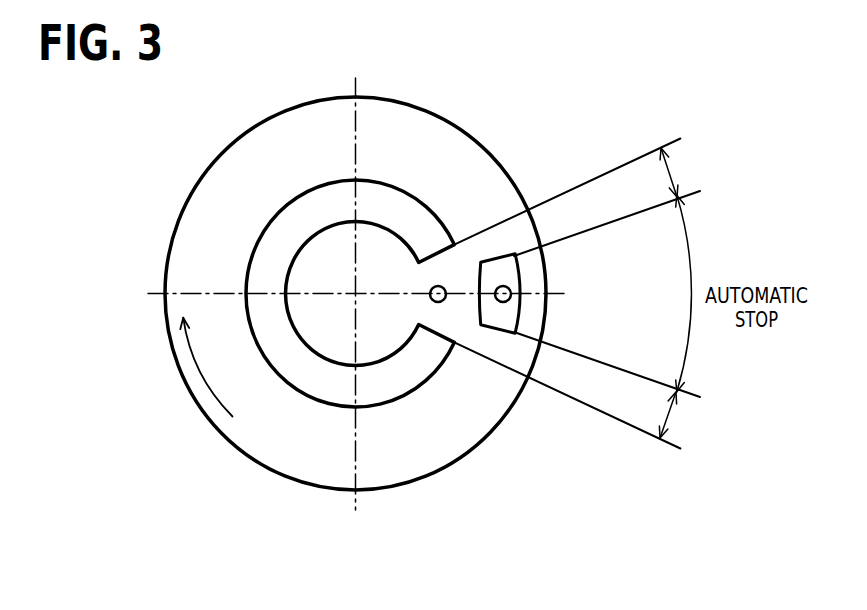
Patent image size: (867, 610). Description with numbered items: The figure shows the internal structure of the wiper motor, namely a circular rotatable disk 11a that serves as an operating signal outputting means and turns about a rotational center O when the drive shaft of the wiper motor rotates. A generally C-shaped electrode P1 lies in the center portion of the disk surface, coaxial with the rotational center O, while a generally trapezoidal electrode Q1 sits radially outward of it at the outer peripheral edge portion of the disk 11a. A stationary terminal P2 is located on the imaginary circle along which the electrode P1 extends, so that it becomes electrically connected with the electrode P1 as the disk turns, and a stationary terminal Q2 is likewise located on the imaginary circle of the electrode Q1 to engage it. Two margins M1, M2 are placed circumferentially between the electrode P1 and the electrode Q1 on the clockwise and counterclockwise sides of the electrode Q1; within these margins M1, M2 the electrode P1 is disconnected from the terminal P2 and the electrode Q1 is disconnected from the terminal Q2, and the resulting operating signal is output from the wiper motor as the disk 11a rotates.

The rotatable disk 11a is at (295, 468).
The C-shaped electrode P1 is at (400, 388).
The stationary terminal P2 is at (438, 286).
The trapezoidal electrode Q1 is at (508, 318).
The stationary terminal Q2 is at (509, 287).
The margin M1 is at (680, 415).
The margin M2 is at (682, 172).
The rotational center O is at (356, 294).